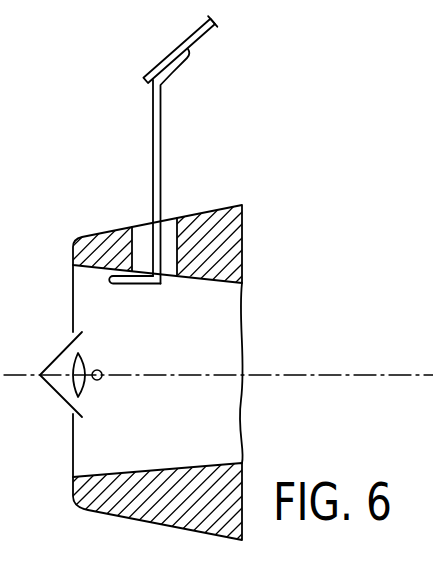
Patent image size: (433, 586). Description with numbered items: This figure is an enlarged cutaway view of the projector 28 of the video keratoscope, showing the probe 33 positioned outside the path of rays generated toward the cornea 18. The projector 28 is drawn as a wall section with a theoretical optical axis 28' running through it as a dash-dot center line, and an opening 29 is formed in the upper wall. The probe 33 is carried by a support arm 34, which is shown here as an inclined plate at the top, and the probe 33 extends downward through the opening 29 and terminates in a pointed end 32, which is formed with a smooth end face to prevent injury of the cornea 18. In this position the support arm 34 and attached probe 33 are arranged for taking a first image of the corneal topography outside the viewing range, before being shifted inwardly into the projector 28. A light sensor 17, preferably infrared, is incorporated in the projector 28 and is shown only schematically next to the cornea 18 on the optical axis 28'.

The light sensor 17 is at (102, 379).
The cornea 18 is at (88, 393).
The projector 28 is at (158, 360).
The theoretical optical axis 28' is at (274, 341).
The opening 29 is at (145, 240).
The pointed end 32 is at (111, 283).
The probe 33 is at (141, 136).
The support arm 34 is at (160, 33).